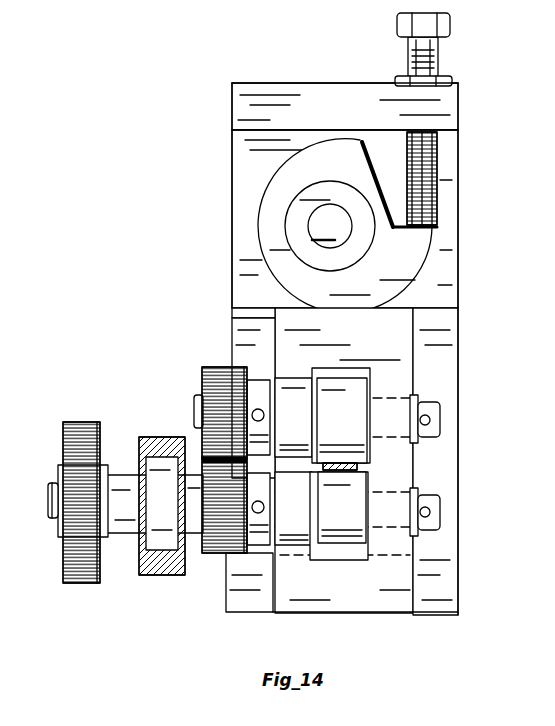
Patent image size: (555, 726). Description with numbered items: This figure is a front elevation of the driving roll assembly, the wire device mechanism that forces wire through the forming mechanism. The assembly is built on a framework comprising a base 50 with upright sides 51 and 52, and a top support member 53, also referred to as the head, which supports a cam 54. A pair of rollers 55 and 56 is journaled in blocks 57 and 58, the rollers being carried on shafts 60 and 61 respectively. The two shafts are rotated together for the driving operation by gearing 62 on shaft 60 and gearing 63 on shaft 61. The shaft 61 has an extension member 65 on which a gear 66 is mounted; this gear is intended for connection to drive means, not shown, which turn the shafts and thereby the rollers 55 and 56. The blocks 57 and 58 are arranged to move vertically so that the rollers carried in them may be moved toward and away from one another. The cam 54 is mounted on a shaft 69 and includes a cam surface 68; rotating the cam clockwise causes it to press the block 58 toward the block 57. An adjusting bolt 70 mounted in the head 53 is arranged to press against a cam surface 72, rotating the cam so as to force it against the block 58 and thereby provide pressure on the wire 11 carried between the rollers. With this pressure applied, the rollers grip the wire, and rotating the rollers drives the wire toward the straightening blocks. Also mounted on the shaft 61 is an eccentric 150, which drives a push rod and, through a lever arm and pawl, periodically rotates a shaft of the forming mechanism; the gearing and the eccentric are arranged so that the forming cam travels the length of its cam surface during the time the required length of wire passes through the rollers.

The wire 11 is at (400, 470).
The base 50 is at (437, 595).
The upright side 51 is at (437, 381).
The upright side 52 is at (240, 330).
The top support member 53 is at (460, 113).
The cam 54 is at (410, 268).
The roller 55 is at (347, 388).
The roller 56 is at (347, 535).
The block 57 is at (293, 538).
The block 58 is at (280, 319).
The shaft 60 is at (436, 420).
The shaft 61 is at (436, 506).
The gearing 62 is at (205, 368).
The gearing 63 is at (215, 553).
The extension member 65 is at (47, 520).
The gear 66 is at (77, 432).
The cam surface 68 is at (270, 182).
The shaft 69 is at (332, 235).
The adjusting bolt 70 is at (433, 178).
The cam surface 72 is at (397, 192).
The eccentric 150 is at (157, 470).